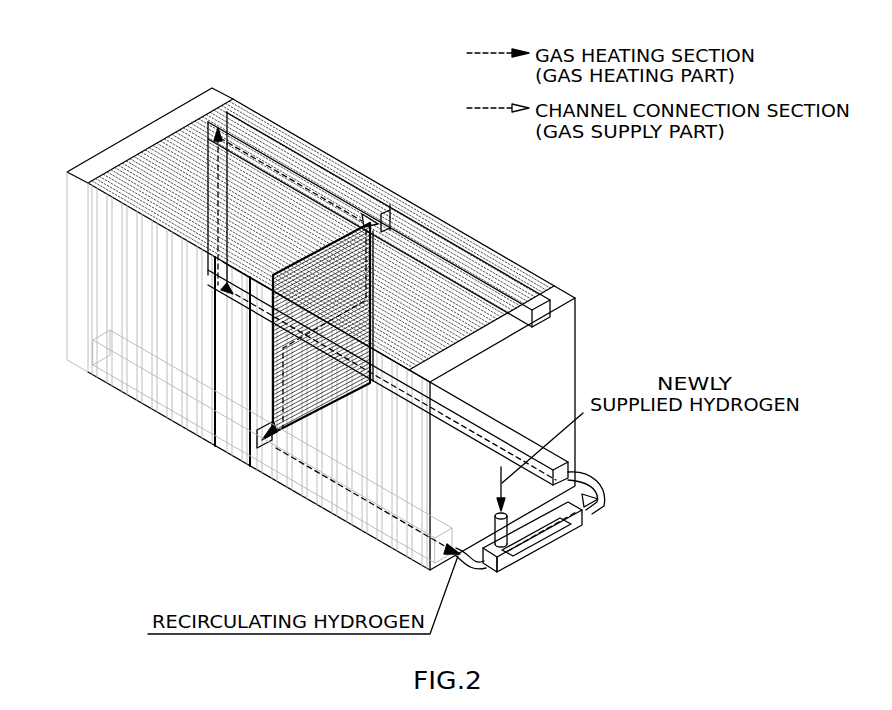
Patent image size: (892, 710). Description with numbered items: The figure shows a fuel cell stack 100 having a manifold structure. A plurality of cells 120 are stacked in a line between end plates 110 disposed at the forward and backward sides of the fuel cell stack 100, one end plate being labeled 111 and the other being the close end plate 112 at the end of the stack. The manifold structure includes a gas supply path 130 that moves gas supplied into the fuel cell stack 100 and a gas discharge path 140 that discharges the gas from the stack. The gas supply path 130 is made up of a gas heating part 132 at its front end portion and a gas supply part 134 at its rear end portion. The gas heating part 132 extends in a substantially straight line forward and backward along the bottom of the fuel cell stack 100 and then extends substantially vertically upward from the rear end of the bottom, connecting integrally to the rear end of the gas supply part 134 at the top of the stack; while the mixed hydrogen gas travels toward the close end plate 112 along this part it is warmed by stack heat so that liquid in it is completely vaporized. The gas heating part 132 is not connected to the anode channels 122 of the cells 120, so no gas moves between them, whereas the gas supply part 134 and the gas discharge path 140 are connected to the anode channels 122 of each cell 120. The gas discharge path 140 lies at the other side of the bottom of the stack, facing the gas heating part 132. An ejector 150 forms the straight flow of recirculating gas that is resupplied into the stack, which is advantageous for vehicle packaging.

The fuel cell stack 100 is at (116, 111).
The end plate 110 is at (371, 295).
The end plate (right) 111 is at (565, 298).
The close end plate 112 is at (214, 97).
The cell 120 is at (253, 388).
The anode channel 122 is at (288, 343).
The gas supply path 130 is at (385, 120).
The gas heating part 132 is at (238, 196).
The gas supply part 134 is at (324, 173).
The gas discharge path 140 is at (347, 497).
The ejector 150 is at (545, 540).